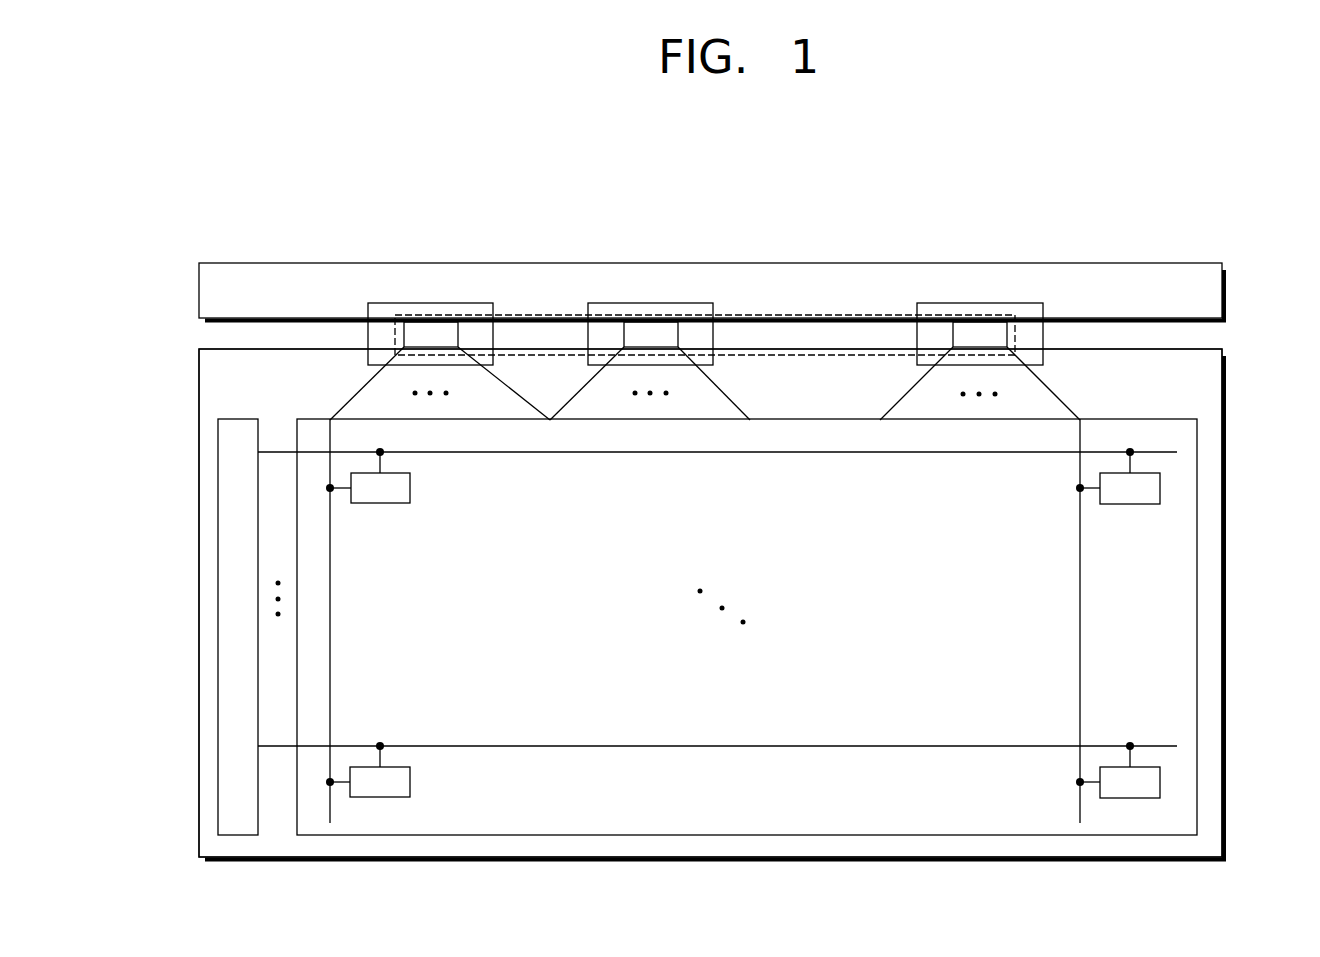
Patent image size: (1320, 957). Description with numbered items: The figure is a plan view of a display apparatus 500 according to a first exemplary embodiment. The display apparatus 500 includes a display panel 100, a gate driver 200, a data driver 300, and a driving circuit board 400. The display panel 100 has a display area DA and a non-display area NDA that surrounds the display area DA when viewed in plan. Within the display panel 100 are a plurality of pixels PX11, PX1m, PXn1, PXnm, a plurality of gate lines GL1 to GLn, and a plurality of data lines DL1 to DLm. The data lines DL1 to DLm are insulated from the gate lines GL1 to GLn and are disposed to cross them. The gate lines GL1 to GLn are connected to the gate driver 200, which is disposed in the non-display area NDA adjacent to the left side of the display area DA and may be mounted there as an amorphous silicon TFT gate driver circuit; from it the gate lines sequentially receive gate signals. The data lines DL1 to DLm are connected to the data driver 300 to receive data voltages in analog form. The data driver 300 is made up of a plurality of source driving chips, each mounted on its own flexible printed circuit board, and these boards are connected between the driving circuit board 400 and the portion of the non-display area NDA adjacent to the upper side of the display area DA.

The display apparatus 500 is at (1148, 205).
The driving circuit board 400 is at (1228, 291).
The display panel 100 is at (1226, 593).
The gate driver 200 is at (218, 625).
The data driver 300 is at (804, 315).
The display area DA is at (1197, 657).
The non-display area NDA is at (208, 543).
The gate line GL1 is at (558, 455).
The gate line GLn is at (565, 745).
The data line DL1 is at (330, 618).
The data line DLm is at (1080, 620).
The pixel PX11 is at (368, 475).
The pixel PX1m is at (1118, 476).
The pixel PXn1 is at (368, 769).
The pixel PXnm is at (1118, 770).